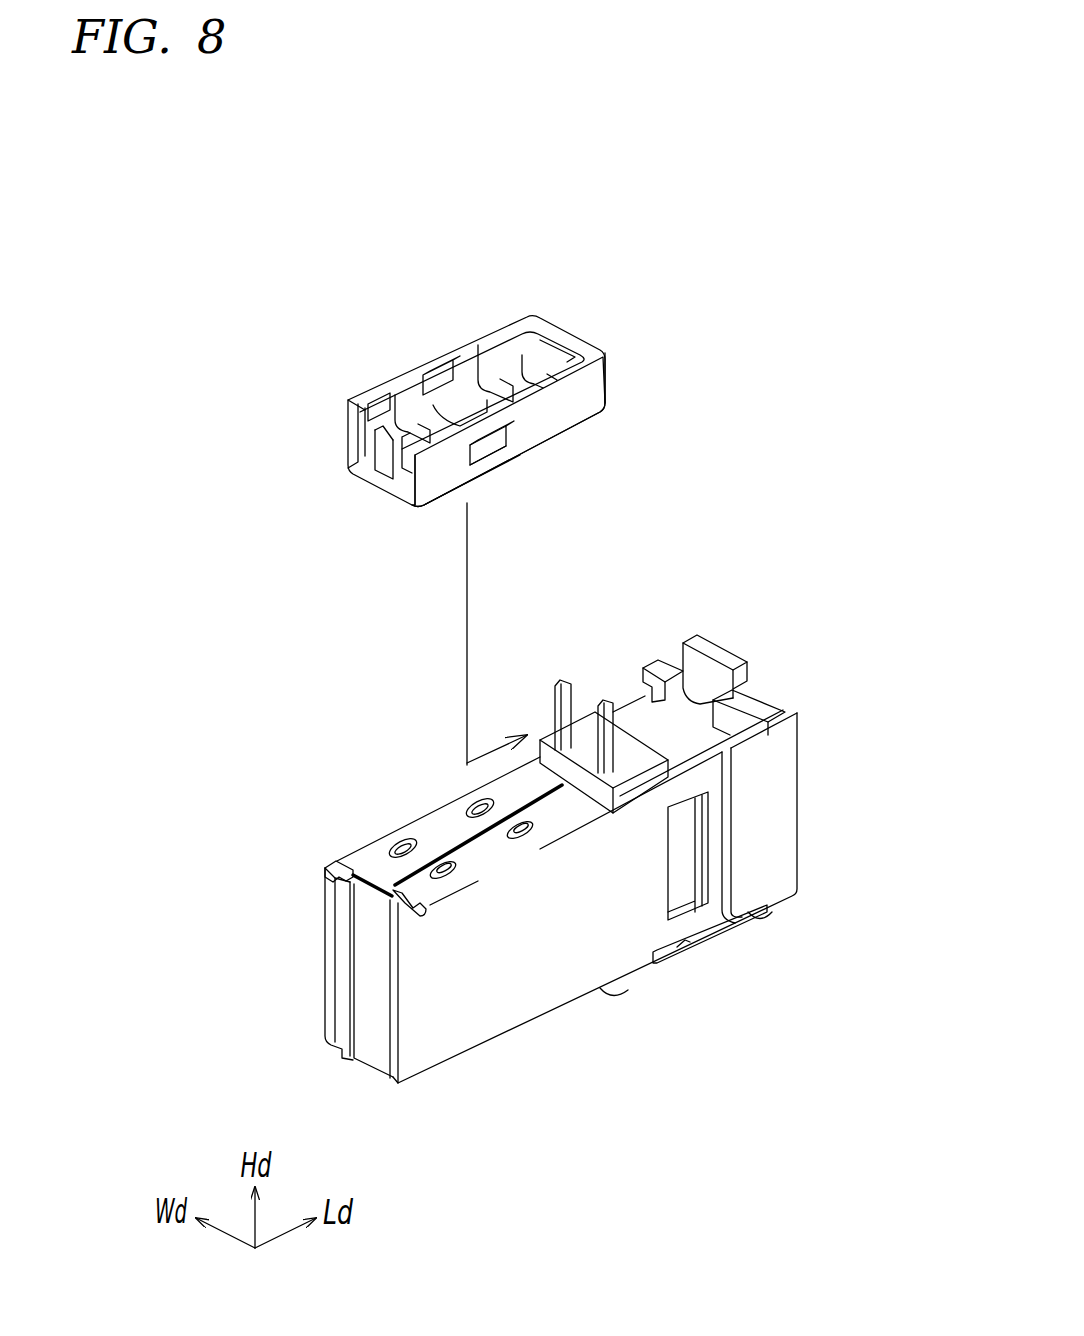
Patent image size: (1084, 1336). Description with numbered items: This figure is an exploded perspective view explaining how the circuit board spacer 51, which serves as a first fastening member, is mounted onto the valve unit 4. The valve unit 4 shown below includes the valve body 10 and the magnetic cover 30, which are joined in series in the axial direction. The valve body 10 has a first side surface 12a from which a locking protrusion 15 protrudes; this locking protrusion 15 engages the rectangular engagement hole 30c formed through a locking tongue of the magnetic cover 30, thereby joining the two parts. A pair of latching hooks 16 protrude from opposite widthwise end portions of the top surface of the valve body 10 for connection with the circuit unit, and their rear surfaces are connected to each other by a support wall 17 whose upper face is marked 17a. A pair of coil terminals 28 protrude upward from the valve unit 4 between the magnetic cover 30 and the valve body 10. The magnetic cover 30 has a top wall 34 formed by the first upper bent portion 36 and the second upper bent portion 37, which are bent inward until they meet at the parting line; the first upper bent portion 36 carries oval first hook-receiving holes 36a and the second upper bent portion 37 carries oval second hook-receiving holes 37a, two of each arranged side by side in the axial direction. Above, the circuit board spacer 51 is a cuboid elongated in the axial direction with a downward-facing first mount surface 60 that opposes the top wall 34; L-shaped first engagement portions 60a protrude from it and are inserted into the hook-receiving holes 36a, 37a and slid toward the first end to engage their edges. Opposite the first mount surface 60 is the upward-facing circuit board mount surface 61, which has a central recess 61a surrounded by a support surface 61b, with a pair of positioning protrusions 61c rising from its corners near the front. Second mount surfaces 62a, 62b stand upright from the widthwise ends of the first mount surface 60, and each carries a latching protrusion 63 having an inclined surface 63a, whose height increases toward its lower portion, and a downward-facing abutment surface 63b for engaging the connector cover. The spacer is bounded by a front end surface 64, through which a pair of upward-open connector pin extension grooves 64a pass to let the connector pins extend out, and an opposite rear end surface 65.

The valve unit 4 is at (873, 662).
The valve body 10 is at (805, 870).
The first side surface 12a is at (780, 787).
The locking protrusion 15 is at (688, 852).
The latching hook 16 is at (677, 655).
The support wall 17 is at (700, 672).
The top face of block 17a is at (730, 658).
The coil terminal 28 is at (608, 712).
The magnetic cover 30 is at (460, 1028).
The engagement hole 30c is at (680, 912).
The top wall 34 is at (372, 848).
The first upper bent portion 36 is at (487, 853).
The first hook-receiving hole 36a is at (523, 833).
The second upper bent portion 37 is at (363, 865).
The second hook-receiving hole 37a is at (403, 848).
The circuit board spacer 51 is at (318, 220).
The first mount surface 60 is at (523, 462).
The first engagement portion 60a is at (462, 498).
The circuit board mount surface 61 is at (522, 343).
The recess 61a is at (545, 360).
The support surface 61b is at (580, 347).
The positioning protrusion 61c is at (396, 430).
The second mount surface 62a is at (592, 393).
The second mount surface 62b is at (455, 345).
The latching protrusion 63 is at (519, 428).
The inclined surface 63a is at (522, 457).
The abutment surface 63b is at (493, 462).
The front end surface 64 is at (378, 472).
The connector pin extension groove 64a is at (362, 438).
The rear end surface 65 is at (613, 363).